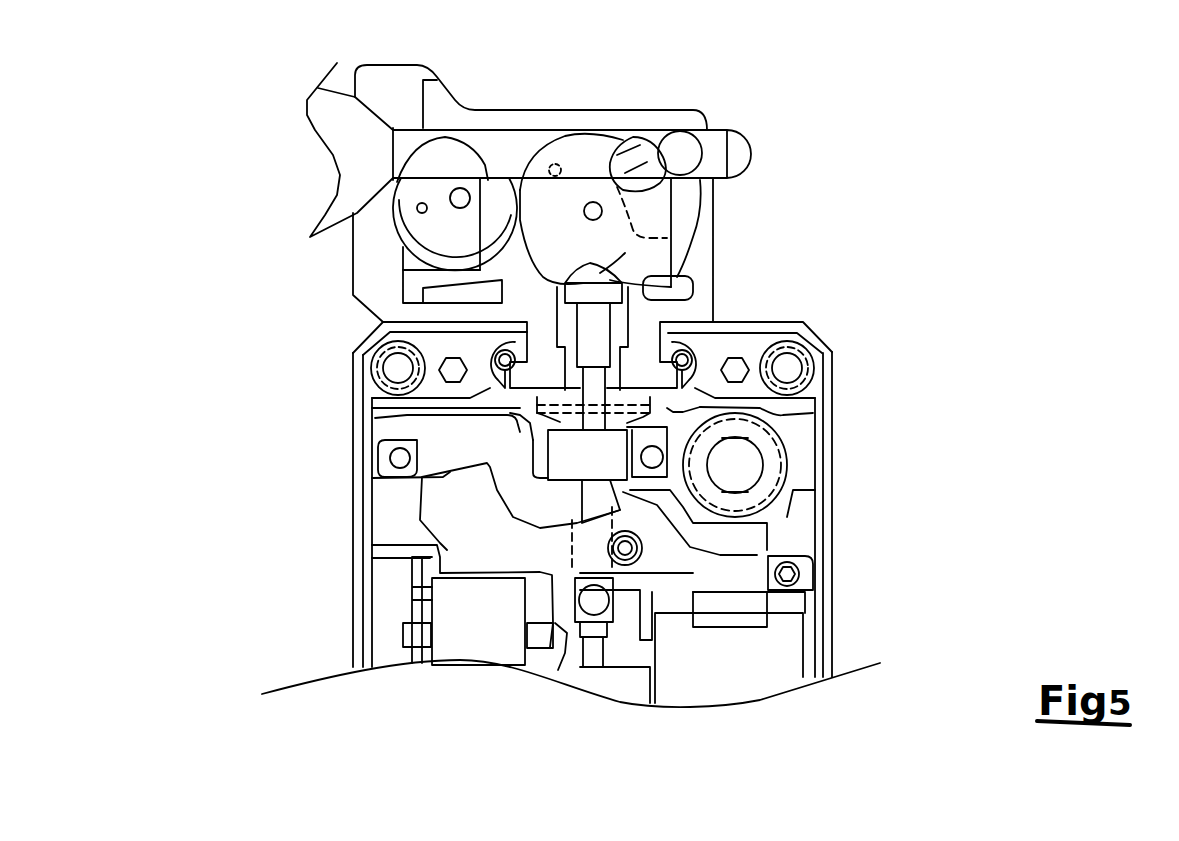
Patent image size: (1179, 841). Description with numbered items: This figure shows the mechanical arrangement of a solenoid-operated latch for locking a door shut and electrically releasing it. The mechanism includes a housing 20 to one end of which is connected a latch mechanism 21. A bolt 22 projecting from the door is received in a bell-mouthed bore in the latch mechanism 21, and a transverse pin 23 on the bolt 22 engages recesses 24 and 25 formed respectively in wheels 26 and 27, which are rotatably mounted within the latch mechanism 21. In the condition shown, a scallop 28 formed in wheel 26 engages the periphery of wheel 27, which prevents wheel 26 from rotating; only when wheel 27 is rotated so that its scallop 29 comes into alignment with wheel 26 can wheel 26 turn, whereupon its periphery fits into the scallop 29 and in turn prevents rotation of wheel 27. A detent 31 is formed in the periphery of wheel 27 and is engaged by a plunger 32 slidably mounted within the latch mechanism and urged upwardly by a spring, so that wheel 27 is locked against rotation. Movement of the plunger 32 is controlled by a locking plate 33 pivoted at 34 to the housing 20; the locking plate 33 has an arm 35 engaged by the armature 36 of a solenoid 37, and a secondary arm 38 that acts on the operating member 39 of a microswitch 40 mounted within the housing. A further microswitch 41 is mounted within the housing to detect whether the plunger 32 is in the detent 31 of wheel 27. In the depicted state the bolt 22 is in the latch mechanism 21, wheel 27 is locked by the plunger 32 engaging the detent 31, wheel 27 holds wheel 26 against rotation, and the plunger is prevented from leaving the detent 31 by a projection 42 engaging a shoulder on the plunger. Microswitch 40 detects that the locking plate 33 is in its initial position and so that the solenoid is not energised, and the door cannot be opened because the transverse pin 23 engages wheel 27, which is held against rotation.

The housing 20 is at (828, 413).
The latch mechanism 21 is at (703, 282).
The bolt 22 is at (507, 150).
The transverse pin 23 is at (682, 148).
The recess 24 is at (485, 153).
The recess 25 is at (640, 155).
The wheel 26 is at (447, 145).
The wheel 27 is at (588, 148).
The scallop 28 is at (520, 210).
The scallop 29 is at (603, 140).
The detent 31 is at (610, 270).
The plunger 32 is at (593, 327).
The locking plate 33 is at (473, 528).
The pivot 34 is at (617, 543).
The arm 35 is at (727, 567).
The armature 36 is at (757, 575).
The solenoid 37 is at (772, 655).
The secondary arm 38 is at (558, 670).
The operating member 39 is at (540, 640).
The microswitch 40 is at (482, 640).
The microswitch 41 is at (625, 687).
The projection 42 is at (625, 495).